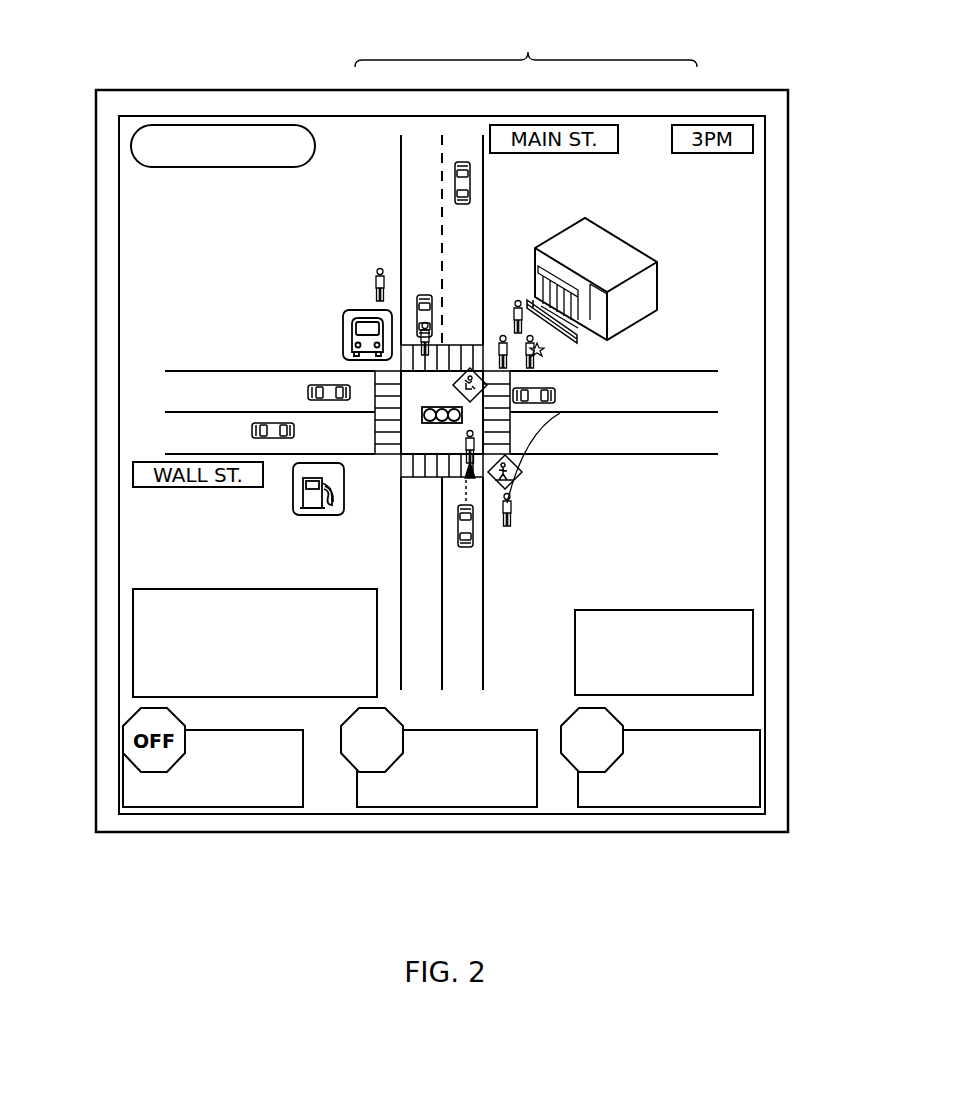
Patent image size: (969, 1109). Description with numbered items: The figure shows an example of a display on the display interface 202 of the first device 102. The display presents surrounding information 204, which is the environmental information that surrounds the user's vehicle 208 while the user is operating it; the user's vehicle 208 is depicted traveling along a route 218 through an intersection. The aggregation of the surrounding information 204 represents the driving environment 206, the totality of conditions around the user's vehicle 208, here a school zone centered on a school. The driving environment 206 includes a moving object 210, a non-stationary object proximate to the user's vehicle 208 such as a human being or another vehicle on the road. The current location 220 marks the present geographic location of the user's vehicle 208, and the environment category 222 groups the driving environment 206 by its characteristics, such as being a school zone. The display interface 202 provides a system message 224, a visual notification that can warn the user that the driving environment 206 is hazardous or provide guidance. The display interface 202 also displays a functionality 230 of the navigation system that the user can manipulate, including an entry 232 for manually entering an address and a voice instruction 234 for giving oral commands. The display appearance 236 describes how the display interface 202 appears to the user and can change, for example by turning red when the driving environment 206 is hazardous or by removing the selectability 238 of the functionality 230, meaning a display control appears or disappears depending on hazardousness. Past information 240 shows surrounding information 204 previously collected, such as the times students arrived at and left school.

The first device 102 is at (157, 72).
The display interface 202 is at (337, 152).
The surrounding information 204 is at (526, 41).
The driving environment 206 is at (658, 207).
The user's vehicle 208 is at (475, 512).
The moving object 210 is at (310, 388).
The route 218 is at (470, 460).
The current location 220 is at (500, 544).
The environment category 222 is at (187, 140).
The system message 224 is at (735, 650).
The functionality 230 is at (720, 783).
The entry 232 is at (227, 783).
The voice instruction 234 is at (512, 785).
The display appearance 236 is at (600, 763).
The selectability 238 is at (363, 752).
The past information 240 is at (242, 625).